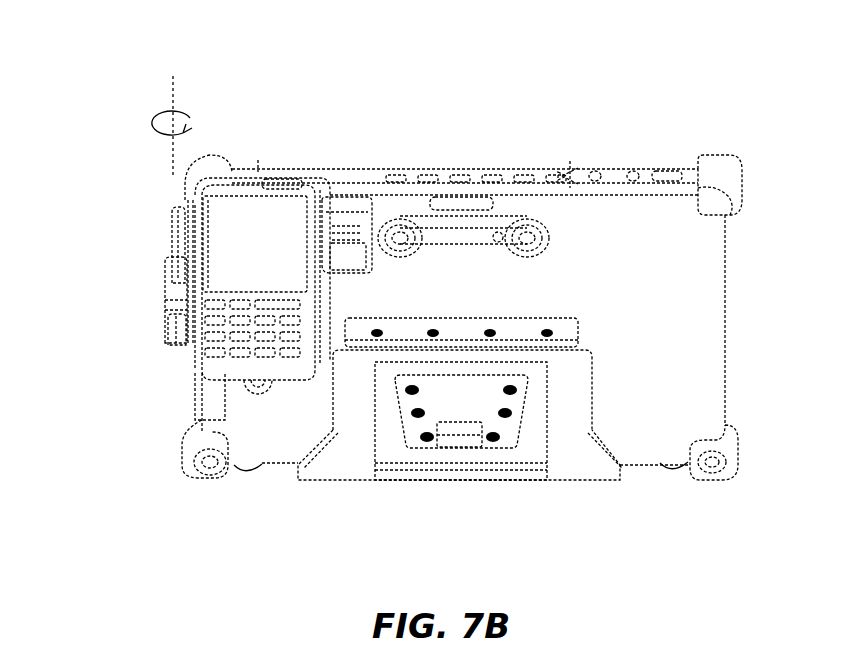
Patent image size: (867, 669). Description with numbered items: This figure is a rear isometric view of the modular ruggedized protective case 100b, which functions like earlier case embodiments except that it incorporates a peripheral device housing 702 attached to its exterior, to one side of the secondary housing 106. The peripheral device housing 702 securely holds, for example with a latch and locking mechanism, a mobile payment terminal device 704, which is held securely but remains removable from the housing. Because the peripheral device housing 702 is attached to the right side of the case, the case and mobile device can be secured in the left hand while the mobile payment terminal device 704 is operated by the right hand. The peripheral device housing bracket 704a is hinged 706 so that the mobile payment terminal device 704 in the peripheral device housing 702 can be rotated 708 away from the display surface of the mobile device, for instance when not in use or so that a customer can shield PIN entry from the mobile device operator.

The modular ruggedized protective case 100b is at (90, 59).
The secondary housing 106 is at (651, 208).
The peripheral device housing 702 is at (172, 326).
The mobile payment terminal device 704 is at (271, 214).
The peripheral device housing bracket 704a is at (170, 290).
The hinge 706 is at (170, 252).
The rotation 708 is at (186, 113).